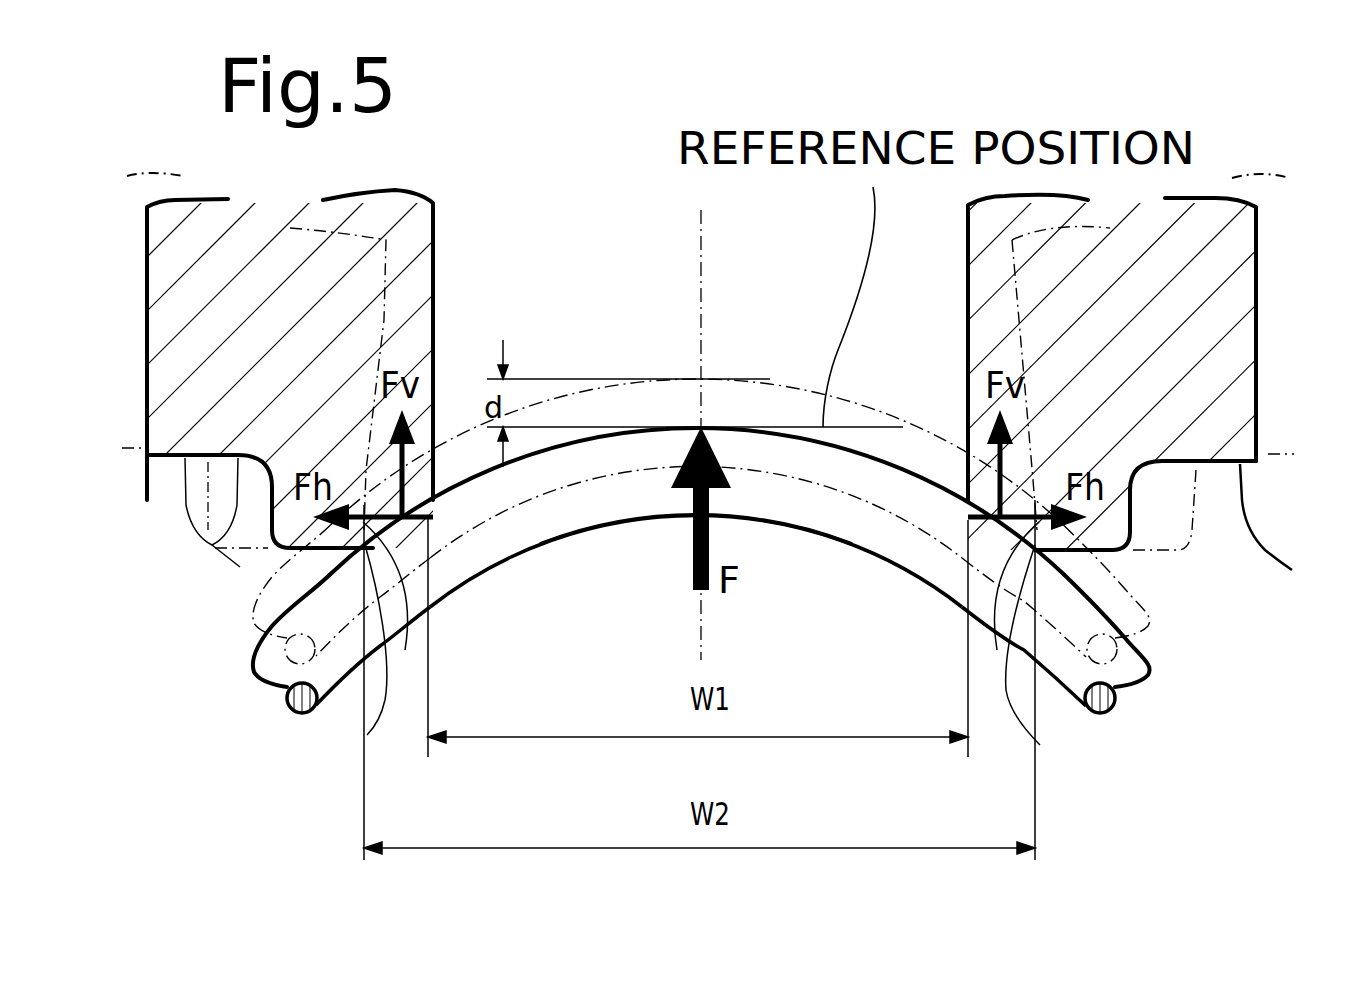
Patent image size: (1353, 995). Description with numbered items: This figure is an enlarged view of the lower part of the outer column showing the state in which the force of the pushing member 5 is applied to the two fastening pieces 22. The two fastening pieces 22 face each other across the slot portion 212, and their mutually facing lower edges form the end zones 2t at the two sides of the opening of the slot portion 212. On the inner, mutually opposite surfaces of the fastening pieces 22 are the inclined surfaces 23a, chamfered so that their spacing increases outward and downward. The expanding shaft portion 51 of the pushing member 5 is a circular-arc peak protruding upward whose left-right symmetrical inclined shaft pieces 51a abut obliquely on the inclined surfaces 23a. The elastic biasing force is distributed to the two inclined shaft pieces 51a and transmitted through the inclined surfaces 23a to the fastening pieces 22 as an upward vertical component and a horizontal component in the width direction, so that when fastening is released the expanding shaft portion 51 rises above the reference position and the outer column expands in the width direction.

The slot portion 212 is at (597, 348).
The fastening pieces 22 is at (228, 522).
The pushing member 5 is at (1110, 610).
The expanding shaft portion 51 is at (905, 485).
The inclined shaft pieces 51a is at (542, 535).
The inclined surfaces 23a is at (405, 617).
The end zones 2t is at (367, 733).